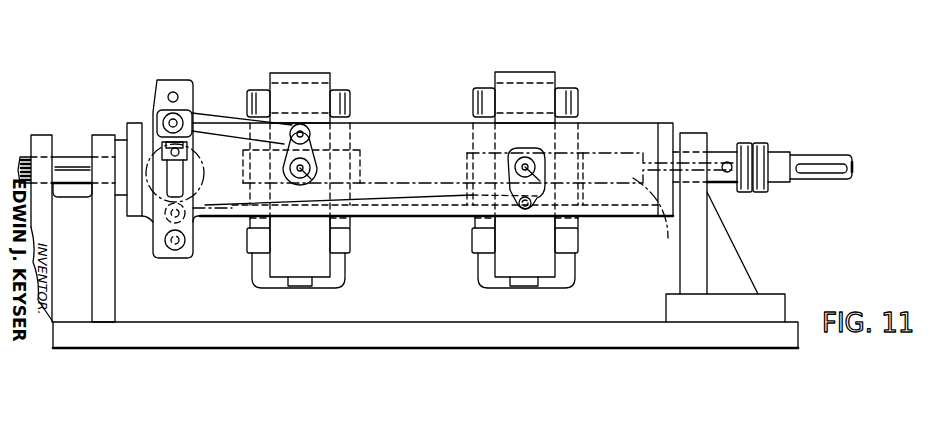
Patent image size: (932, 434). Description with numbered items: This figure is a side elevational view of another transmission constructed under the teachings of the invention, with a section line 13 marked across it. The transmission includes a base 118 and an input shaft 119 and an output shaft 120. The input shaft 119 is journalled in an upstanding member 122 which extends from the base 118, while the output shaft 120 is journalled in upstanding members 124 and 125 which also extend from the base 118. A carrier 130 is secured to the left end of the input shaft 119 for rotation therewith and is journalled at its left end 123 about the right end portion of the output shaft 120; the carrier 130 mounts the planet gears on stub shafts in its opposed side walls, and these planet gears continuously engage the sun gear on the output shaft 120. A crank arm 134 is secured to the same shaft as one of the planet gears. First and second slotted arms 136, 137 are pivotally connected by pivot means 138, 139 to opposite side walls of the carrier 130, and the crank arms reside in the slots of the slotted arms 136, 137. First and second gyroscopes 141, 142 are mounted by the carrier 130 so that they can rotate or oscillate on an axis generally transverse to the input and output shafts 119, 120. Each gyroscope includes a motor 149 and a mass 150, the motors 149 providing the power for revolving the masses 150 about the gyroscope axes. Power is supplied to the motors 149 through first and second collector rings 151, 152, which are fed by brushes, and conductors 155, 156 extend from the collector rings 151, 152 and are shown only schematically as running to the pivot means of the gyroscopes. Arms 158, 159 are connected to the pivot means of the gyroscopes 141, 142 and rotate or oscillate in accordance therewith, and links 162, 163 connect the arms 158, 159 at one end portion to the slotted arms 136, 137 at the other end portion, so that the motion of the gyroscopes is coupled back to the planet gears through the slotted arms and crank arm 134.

The section line 13- 13 is at (173, 78).
The base 118 is at (473, 347).
The input shaft 119 is at (818, 178).
The output shaft 120 is at (68, 157).
The upstanding member 122 is at (695, 134).
The left end of carrier 123 is at (116, 146).
The upstanding member 124 is at (100, 138).
The upstanding member 125 is at (33, 143).
The carrier 130 is at (402, 128).
The crank arm 134 is at (187, 152).
The first slotted arm 136 is at (184, 223).
The second slotted arm 137 is at (163, 78).
The pivot means 138 is at (184, 247).
The pivot means 139 is at (176, 92).
The first gyroscope 141 is at (340, 270).
The second gyroscope 142 is at (563, 263).
The motor 149 is at (340, 222).
The mass 150 is at (348, 90).
The first collector ring 151 is at (748, 143).
The second collector ring 152 is at (758, 143).
The conductor 155 is at (713, 164).
The conductor 156 is at (659, 218).
The arm 158 is at (308, 147).
The arm 159 is at (537, 197).
The link 162 is at (223, 116).
The link 163 is at (471, 204).